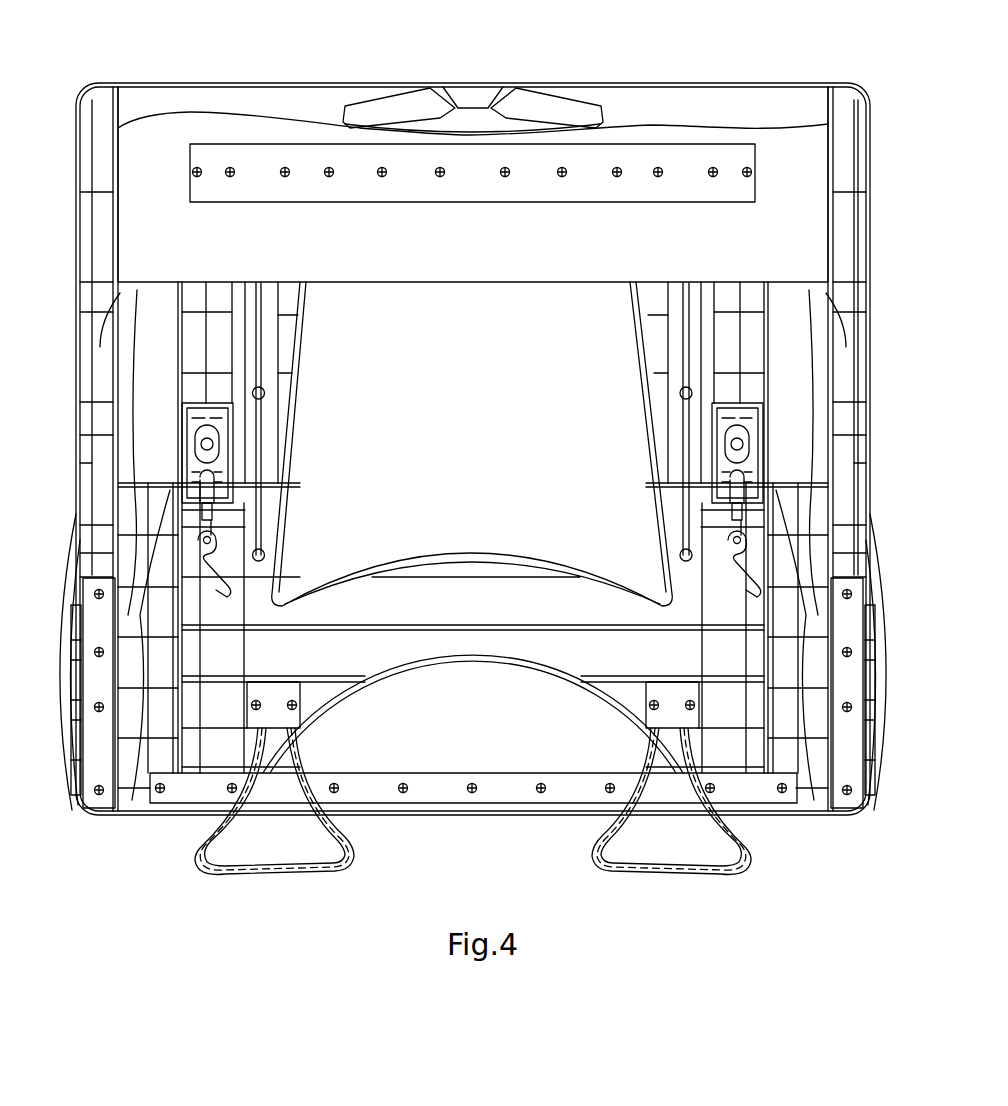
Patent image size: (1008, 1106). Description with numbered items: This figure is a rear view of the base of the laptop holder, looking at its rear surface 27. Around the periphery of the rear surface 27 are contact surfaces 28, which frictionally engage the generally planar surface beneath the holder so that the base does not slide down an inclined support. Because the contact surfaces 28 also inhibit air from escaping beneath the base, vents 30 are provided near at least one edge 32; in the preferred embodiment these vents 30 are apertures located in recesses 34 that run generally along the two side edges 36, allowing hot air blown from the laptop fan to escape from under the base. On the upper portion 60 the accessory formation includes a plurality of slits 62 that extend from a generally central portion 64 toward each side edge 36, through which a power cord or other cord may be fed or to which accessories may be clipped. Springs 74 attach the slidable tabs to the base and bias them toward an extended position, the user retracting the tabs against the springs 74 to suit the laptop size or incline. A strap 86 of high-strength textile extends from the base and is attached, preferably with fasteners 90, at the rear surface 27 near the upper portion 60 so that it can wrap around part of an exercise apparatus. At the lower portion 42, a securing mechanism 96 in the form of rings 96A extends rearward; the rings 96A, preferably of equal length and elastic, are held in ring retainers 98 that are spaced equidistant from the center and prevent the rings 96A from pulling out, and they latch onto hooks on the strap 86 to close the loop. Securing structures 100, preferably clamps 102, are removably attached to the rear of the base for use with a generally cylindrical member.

The rear surface 27 is at (222, 708).
The contact surfaces 28 is at (98, 792).
The vents 30 is at (93, 88).
The edge 32 is at (621, 85).
The recesses 34 is at (104, 292).
The side edges 36 is at (82, 772).
The lower portion 42 is at (112, 782).
The upper portion 60 is at (470, 130).
The slits 62 is at (388, 105).
The central portion 64 is at (468, 92).
The springs 74 is at (254, 425).
The strap 86 is at (772, 160).
The fasteners 90 is at (329, 167).
The securing mechanism 96 is at (230, 878).
The rings 96A is at (282, 872).
The ring retainers 98 is at (292, 712).
The securing structures 100 is at (170, 792).
The clamps 102 is at (207, 802).